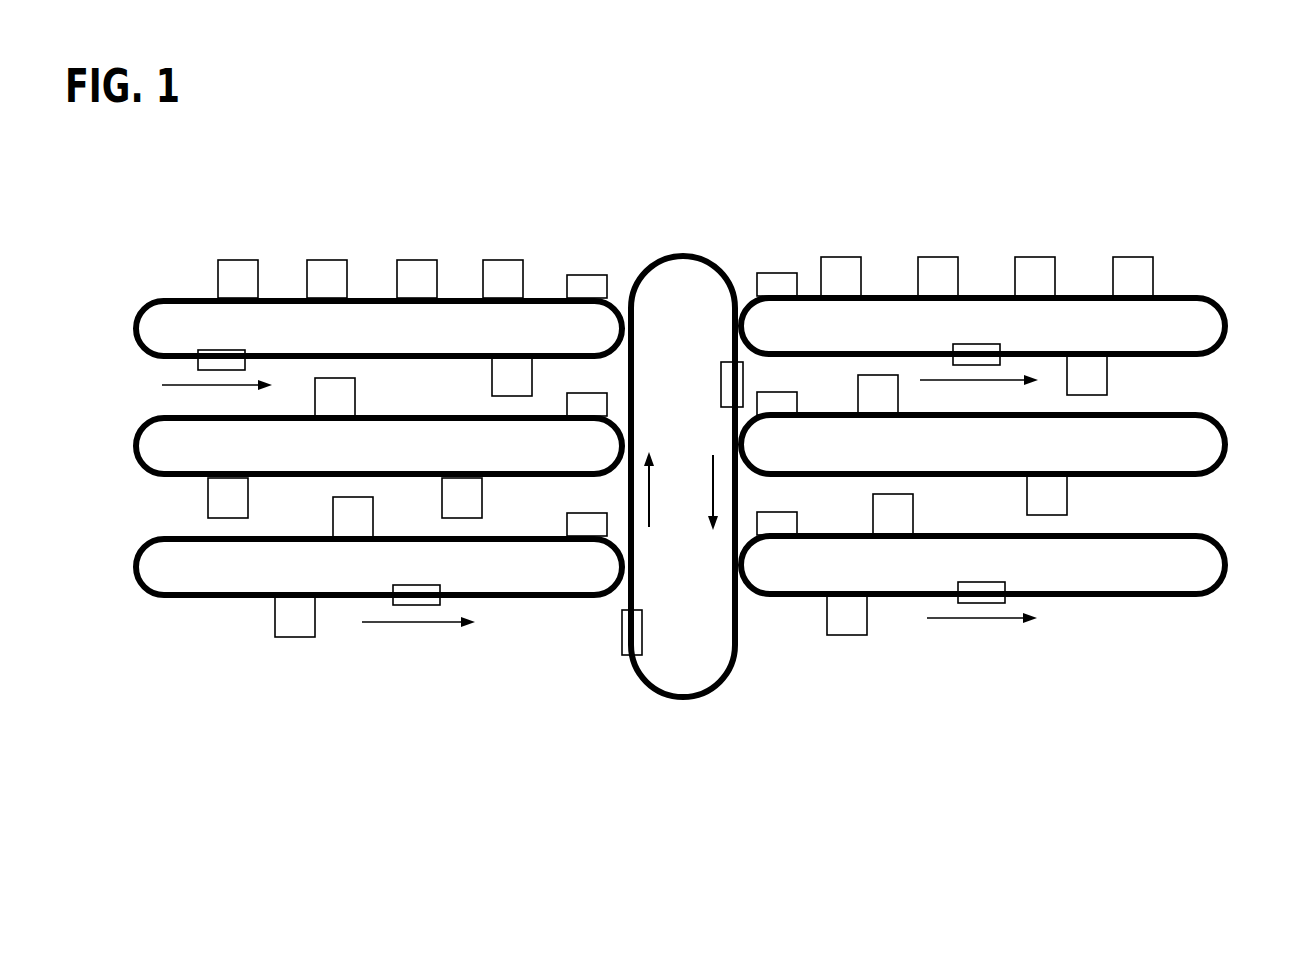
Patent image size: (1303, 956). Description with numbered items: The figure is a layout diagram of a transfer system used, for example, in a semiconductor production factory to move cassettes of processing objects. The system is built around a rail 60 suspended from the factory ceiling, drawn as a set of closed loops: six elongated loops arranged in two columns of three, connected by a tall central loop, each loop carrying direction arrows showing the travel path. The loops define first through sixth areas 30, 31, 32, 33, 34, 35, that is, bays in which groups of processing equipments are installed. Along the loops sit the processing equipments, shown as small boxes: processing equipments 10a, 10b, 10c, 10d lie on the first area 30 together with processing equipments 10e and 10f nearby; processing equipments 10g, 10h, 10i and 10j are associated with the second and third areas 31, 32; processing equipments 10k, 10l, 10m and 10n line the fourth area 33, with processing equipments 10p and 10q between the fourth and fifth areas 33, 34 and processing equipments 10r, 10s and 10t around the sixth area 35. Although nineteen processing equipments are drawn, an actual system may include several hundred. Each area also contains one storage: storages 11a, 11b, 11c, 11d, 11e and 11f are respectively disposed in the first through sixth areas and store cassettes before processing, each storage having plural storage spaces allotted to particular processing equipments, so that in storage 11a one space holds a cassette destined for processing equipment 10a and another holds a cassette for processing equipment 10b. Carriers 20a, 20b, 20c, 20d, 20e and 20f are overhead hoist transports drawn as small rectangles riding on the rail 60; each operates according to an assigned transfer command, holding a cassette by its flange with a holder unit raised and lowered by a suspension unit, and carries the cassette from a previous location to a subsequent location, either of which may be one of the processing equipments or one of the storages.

The rail 60 is at (372, 298).
The first area 30 is at (116, 330).
The second area 31 is at (116, 450).
The third area 32 is at (116, 570).
The fourth area 33 is at (1248, 325).
The fifth area 34 is at (1248, 445).
The sixth area 35 is at (1246, 563).
The processing equipment 10a is at (238, 270).
The processing equipment 10b is at (328, 270).
The processing equipment 10c is at (417, 270).
The processing equipment 10d is at (503, 270).
The processing equipment 10e is at (504, 380).
The processing equipment 10f is at (344, 393).
The processing equipment 10g is at (226, 500).
The processing equipment 10h is at (462, 497).
The processing equipment 10i is at (352, 516).
The processing equipment 10j is at (292, 620).
The processing equipment 10k is at (841, 268).
The processing equipment 10l is at (937, 268).
The processing equipment 10m is at (1034, 268).
The processing equipment 10n is at (1132, 268).
The processing equipment 10p is at (1088, 378).
The processing equipment 10q is at (878, 397).
The processing equipment 10r is at (1050, 497).
The processing equipment 10s is at (893, 517).
The processing equipment 10t is at (845, 616).
The storage 11a is at (586, 285).
The storage 11b is at (588, 406).
The storage 11c is at (588, 526).
The storage 11d is at (778, 284).
The storage 11e is at (770, 406).
The storage 11f is at (770, 526).
The carrier 20a is at (210, 358).
The carrier 20b is at (410, 600).
The carrier 20c is at (632, 627).
The carrier 20d is at (732, 384).
The carrier 20e is at (980, 352).
The carrier 20f is at (972, 600).